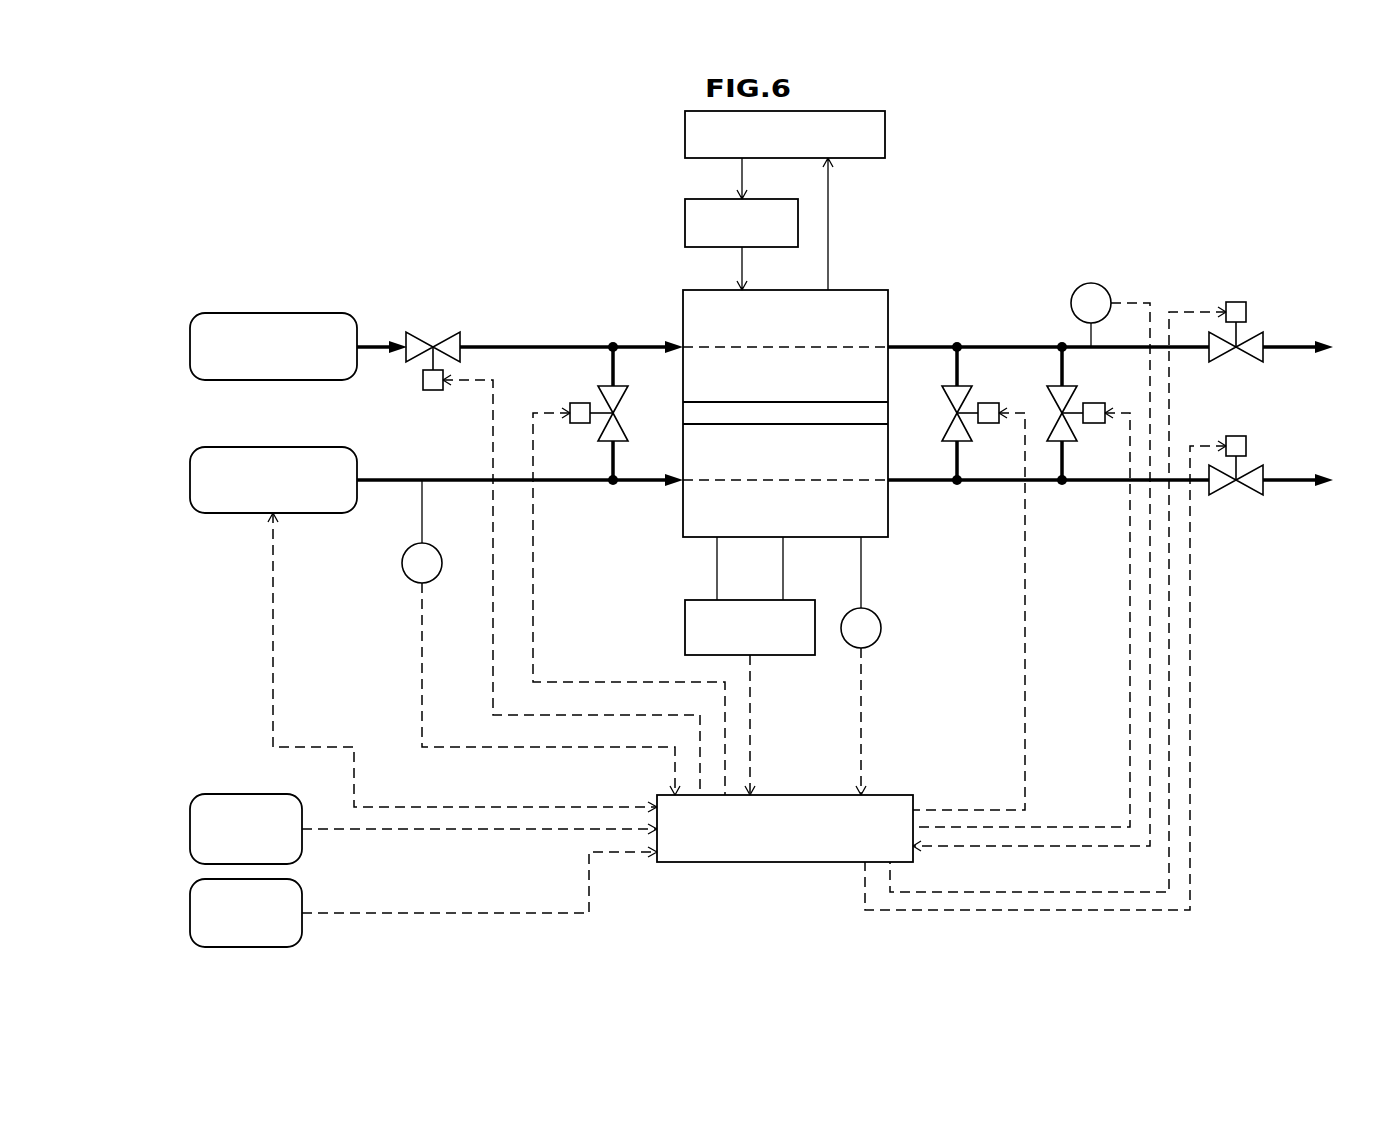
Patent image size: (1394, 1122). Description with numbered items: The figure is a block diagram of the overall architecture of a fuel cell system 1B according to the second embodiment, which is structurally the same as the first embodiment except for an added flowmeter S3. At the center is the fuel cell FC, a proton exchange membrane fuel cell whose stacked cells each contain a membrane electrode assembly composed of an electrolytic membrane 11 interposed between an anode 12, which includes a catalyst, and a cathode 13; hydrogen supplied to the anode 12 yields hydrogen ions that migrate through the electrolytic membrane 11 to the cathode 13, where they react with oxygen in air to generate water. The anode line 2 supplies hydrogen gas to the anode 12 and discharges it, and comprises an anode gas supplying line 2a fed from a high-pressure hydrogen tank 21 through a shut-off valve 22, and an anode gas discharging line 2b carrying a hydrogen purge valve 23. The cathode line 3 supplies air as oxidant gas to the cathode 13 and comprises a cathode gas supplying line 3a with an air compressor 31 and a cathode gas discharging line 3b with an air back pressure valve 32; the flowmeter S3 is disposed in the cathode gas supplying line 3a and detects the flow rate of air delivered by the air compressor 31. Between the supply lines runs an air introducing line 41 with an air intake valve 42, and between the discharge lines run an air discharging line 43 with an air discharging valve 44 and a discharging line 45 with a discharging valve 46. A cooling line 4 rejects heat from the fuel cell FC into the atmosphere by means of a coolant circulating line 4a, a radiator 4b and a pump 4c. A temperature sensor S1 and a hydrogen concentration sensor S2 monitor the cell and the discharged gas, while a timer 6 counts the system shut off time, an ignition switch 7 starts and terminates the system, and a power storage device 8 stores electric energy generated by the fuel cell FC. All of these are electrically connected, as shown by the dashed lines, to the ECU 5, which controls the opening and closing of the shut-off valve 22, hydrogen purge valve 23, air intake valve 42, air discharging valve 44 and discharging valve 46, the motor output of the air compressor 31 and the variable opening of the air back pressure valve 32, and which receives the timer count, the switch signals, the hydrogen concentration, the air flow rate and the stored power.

The fuel cell system 1B is at (1041, 150).
The anode line 2 is at (373, 258).
The anode gas supplying line 2a is at (503, 346).
The anode gas discharging line 2b is at (980, 347).
The cathode line 3 is at (396, 538).
The cathode gas supplying line 3a is at (400, 480).
The cathode gas discharging line 3b is at (988, 483).
The cooling line 4 is at (913, 172).
The coolant circulating line 4a is at (742, 179).
The radiator 4b is at (825, 113).
The pump 4c is at (760, 200).
The ECU 5 is at (893, 797).
The timer 6 is at (285, 795).
The ignition switch 7 is at (285, 880).
The power storage device 8 is at (800, 600).
The electrolytic membrane 11 is at (888, 412).
The anode 12 is at (888, 375).
The cathode 13 is at (888, 452).
The high-pressure hydrogen tank 21 is at (275, 313).
The shut-off valve 22 is at (420, 342).
The hydrogen purge valve 23 is at (1250, 332).
The air compressor 31 is at (275, 447).
The air back pressure valve 32 is at (1250, 466).
The air introducing line 41 is at (617, 366).
The air intake valve 42 is at (628, 421).
The air discharging line 43 is at (962, 373).
The air discharging valve 44 is at (972, 397).
The discharging line 45 is at (1067, 373).
The discharging valve 46 is at (1077, 397).
The fuel cell FC is at (864, 283).
The temperature sensor S1 is at (880, 620).
The hydrogen concentration sensor S2 is at (1107, 289).
The flowmeter S3 is at (438, 578).